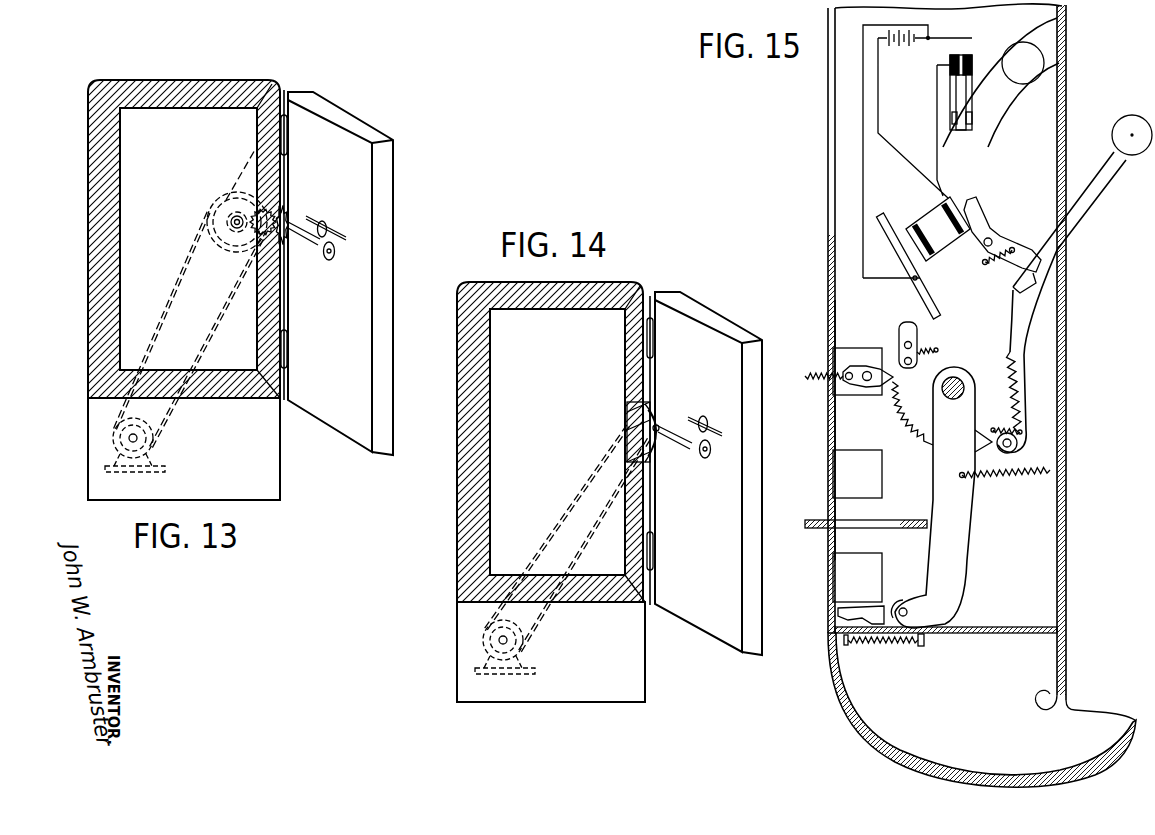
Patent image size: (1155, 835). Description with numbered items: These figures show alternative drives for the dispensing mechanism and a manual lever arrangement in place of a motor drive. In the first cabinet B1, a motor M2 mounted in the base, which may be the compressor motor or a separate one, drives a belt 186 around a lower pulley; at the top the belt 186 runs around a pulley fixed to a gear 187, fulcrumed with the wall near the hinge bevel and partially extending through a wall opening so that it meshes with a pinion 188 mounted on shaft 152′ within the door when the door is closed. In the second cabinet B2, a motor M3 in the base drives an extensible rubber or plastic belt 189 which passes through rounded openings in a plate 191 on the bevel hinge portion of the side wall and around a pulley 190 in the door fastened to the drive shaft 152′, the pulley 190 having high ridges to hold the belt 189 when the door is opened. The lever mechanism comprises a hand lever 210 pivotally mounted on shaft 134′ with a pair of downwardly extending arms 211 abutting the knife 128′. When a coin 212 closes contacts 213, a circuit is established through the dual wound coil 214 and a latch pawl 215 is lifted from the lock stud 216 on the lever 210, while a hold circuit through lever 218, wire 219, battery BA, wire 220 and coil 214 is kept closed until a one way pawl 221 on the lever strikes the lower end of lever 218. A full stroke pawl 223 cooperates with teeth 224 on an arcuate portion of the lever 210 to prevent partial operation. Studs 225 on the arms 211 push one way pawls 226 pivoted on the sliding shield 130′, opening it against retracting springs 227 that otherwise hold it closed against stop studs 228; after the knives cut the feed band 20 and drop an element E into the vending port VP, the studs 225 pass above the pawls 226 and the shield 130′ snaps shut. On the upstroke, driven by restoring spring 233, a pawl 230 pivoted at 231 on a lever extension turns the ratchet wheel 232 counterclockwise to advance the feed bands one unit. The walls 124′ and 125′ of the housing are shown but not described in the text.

In FIG. 13, the cabinet B1 is at (100, 277).
In FIG. 14, the cabinet B2 is at (468, 536).
In FIG. 13, the belt 186 is at (177, 328).
In FIG. 14, the belt 189 is at (540, 557).
In FIG. 13, the motor M2 is at (112, 433).
In FIG. 14, the motor M3 is at (482, 634).
In FIG. 13, the gear 187 is at (263, 208).
In FIG. 13, the pinion 188 is at (284, 218).
In FIG. 13, the shaft 152′ is at (310, 243).
In FIG. 14, the shaft 152′ is at (680, 447).
In FIG. 14, the pulley 190 is at (659, 413).
In FIG. 14, the plate 191 is at (627, 402).
In FIG. 15, the left wall 125′ is at (828, 302).
In FIG. 15, the right wall 124′ is at (1066, 520).
In FIG. 15, the sliding shield 130′ is at (828, 628).
In FIG. 15, the knife 128′ is at (880, 528).
In FIG. 15, the feed band 20 is at (836, 332).
In FIG. 15, the element E is at (860, 350).
In FIG. 15, the wire 219 is at (862, 172).
In FIG. 15, the battery BA is at (894, 46).
In FIG. 15, the wire 220 is at (878, 112).
In FIG. 15, the contacts 213 is at (963, 128).
In FIG. 15, the coin 212 is at (1001, 82).
In FIG. 15, the hand lever 210 is at (1070, 227).
In FIG. 15, the lock stud 216 is at (894, 215).
In FIG. 15, the latch pawl 215 is at (981, 231).
In FIG. 15, the lever 218 is at (898, 243).
In FIG. 15, the dual wound coil 214 is at (955, 236).
In FIG. 15, the one way pawl 221 is at (905, 322).
In FIG. 15, the full stroke pawl 223 is at (840, 362).
In FIG. 15, the teeth 224 is at (907, 402).
In FIG. 15, the shaft 134′ is at (956, 380).
In FIG. 15, the downwardly extending arms 211 is at (967, 500).
In FIG. 15, the ratchet wheel 232 is at (1022, 378).
In FIG. 15, the pawl 230 is at (1028, 420).
In FIG. 15, the pivot 231 is at (1016, 446).
In FIG. 15, the restoring spring 233 is at (1022, 472).
In FIG. 15, the studs 225 is at (905, 608).
In FIG. 15, the one way pawls 226 is at (878, 607).
In FIG. 15, the retracting springs 227 is at (871, 648).
In FIG. 15, the stop studs 228 is at (907, 644).
In FIG. 15, the vending port VP is at (982, 710).